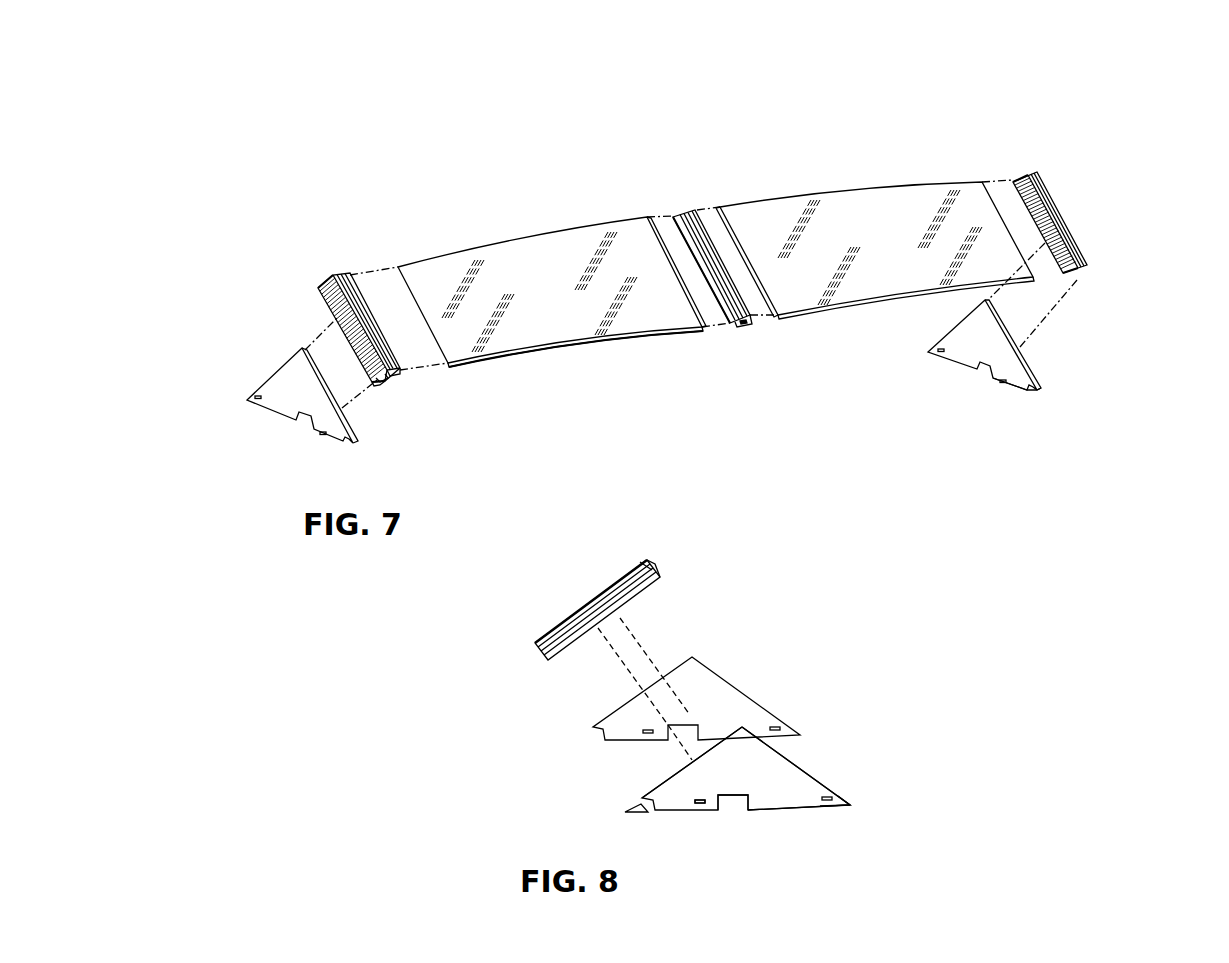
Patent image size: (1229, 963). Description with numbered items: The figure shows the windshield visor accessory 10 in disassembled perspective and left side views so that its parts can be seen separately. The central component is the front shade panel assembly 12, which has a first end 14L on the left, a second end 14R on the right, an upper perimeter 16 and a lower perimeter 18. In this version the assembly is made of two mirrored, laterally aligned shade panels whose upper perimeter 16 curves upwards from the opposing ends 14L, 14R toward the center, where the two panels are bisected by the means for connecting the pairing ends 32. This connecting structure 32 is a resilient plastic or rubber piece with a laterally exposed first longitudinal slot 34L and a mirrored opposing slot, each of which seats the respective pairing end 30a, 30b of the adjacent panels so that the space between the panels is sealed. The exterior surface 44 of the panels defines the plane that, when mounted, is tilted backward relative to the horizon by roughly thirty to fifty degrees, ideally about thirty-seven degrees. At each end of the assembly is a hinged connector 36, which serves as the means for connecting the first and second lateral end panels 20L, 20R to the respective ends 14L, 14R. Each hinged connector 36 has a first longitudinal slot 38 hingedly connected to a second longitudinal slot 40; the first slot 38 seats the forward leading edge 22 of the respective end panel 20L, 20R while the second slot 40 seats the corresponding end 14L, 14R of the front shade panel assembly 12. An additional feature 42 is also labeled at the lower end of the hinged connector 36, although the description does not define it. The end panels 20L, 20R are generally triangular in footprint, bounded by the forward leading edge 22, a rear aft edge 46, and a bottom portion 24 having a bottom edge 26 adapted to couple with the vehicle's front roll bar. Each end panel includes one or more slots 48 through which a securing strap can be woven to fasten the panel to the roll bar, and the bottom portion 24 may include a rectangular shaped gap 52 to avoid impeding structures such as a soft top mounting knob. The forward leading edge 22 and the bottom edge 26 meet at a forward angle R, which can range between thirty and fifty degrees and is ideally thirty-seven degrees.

In FIG. 7, the windshield visor accessory 10 is at (397, 163).
In FIG. 8, the windshield visor accessory 10 is at (878, 640).
In FIG. 7, the front shade panel assembly 12 is at (768, 183).
In FIG. 8, the front shade panel assembly 12 is at (555, 586).
In FIG. 7, the first end (left) 14L is at (403, 287).
In FIG. 7, the second end (right) 14R is at (990, 180).
In FIG. 7, the upper perimeter 16 is at (497, 238).
In FIG. 7, the lower perimeter 18 is at (583, 346).
In FIG. 7, the first lateral end panel 20L is at (278, 355).
In FIG. 8, the first lateral end panel 20L is at (826, 765).
In FIG. 7, the second lateral end panel 20R is at (1040, 360).
In FIG. 8, the second lateral end panel 20R is at (738, 665).
In FIG. 7, the forward leading edge 22 is at (1035, 380).
In FIG. 8, the forward leading edge 22 is at (665, 780).
In FIG. 8, the bottom portion 24 is at (772, 815).
In FIG. 8, the bottom edge 26 is at (813, 815).
In FIG. 7, the pairing end 30a is at (663, 213).
In FIG. 7, the pairing end 30b is at (767, 312).
In FIG. 7, the means for connecting the pairing ends 32 is at (703, 196).
In FIG. 7, the first longitudinal slot 34L is at (741, 326).
In FIG. 7, the hinged connector 36 is at (312, 272).
In FIG. 7, the first longitudinal slot 38 is at (374, 386).
In FIG. 7, the second longitudinal slot 40 is at (399, 373).
In FIG. 7, the channel lip 42 is at (378, 381).
In FIG. 7, the exterior surface 44 is at (537, 272).
In FIG. 8, the rear aft edge 46 is at (835, 790).
In FIG. 8, the slot 48 is at (698, 812).
In FIG. 8, the shaped gap 52 is at (735, 815).
In FIG. 8, the forward angle R is at (585, 737).